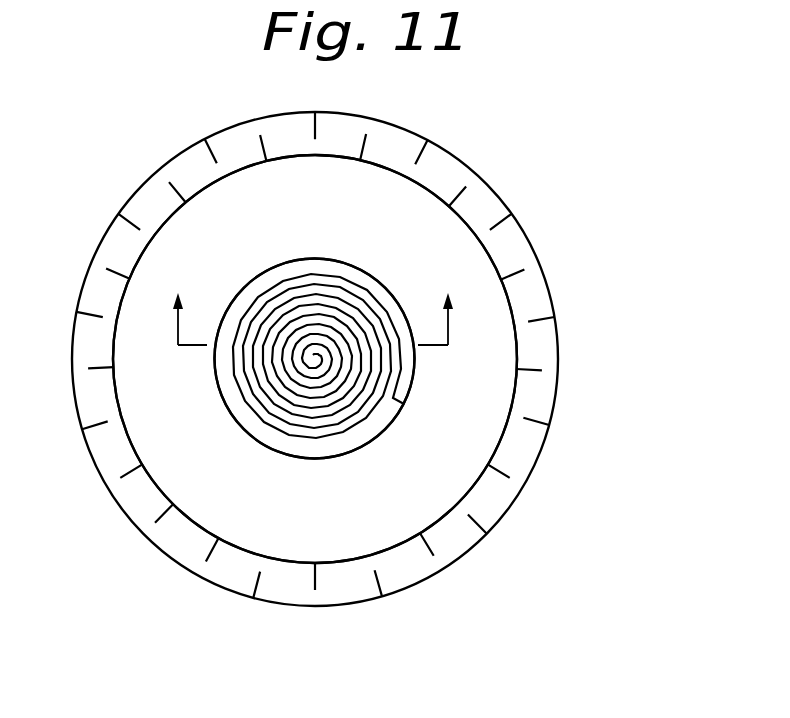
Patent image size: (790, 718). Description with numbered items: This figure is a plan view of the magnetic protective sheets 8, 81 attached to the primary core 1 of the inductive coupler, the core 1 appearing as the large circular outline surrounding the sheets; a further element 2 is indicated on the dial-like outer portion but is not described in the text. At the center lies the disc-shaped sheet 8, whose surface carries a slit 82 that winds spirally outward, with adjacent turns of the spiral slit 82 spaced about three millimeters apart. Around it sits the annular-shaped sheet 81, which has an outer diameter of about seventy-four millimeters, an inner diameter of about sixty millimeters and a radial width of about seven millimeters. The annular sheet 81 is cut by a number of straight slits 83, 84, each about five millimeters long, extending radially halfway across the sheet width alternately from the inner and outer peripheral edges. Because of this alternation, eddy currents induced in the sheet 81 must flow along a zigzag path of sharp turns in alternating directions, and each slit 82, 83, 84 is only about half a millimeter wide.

The primary core 1 is at (509, 191).
The dial 2 is at (377, 538).
The disc-shaped protective sheet 8 is at (385, 413).
The annular-shaped protective sheet 81 is at (460, 535).
The spiral slit 82 is at (375, 303).
The straight slit 83 is at (545, 430).
The straight slit 84 is at (542, 370).